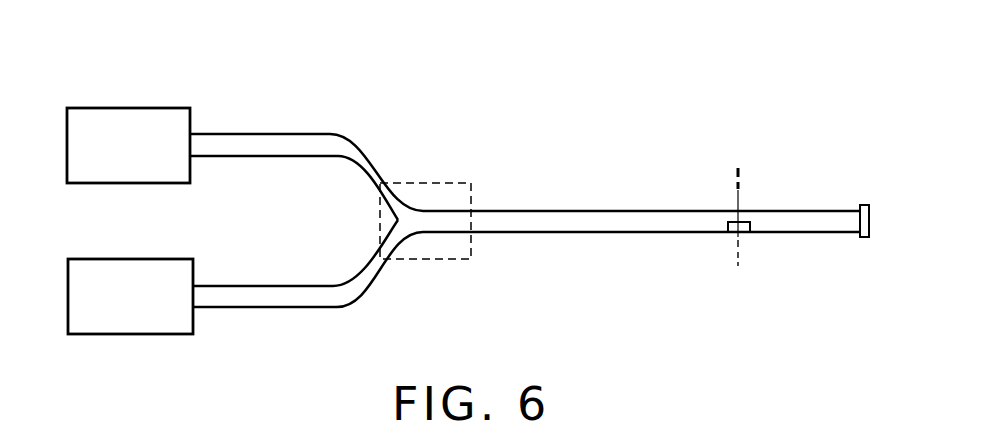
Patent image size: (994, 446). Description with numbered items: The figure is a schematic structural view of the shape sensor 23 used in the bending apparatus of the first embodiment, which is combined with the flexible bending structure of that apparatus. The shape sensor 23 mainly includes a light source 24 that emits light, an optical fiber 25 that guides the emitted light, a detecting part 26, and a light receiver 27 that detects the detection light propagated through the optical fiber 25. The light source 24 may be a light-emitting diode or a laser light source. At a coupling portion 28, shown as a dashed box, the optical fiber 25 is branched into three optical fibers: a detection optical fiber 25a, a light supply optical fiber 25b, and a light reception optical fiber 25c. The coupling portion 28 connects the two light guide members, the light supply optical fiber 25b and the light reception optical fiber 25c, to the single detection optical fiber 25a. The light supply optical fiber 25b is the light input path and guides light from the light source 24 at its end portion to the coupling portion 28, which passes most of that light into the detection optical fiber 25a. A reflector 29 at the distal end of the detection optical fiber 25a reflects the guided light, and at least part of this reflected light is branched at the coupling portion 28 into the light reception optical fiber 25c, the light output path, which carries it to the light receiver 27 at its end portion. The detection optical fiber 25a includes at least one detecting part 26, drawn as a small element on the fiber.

The shape sensor 23 is at (603, 93).
The light source 24 is at (160, 107).
The optical fiber 25 is at (525, 188).
The detection optical fiber 25a is at (653, 153).
The light supply optical fiber 25b is at (275, 140).
The light reception optical fiber 25c is at (275, 288).
The detecting part 26 is at (750, 233).
The light receiver 27 is at (160, 258).
The coupling portion 28 is at (443, 260).
The reflector 29 is at (866, 238).